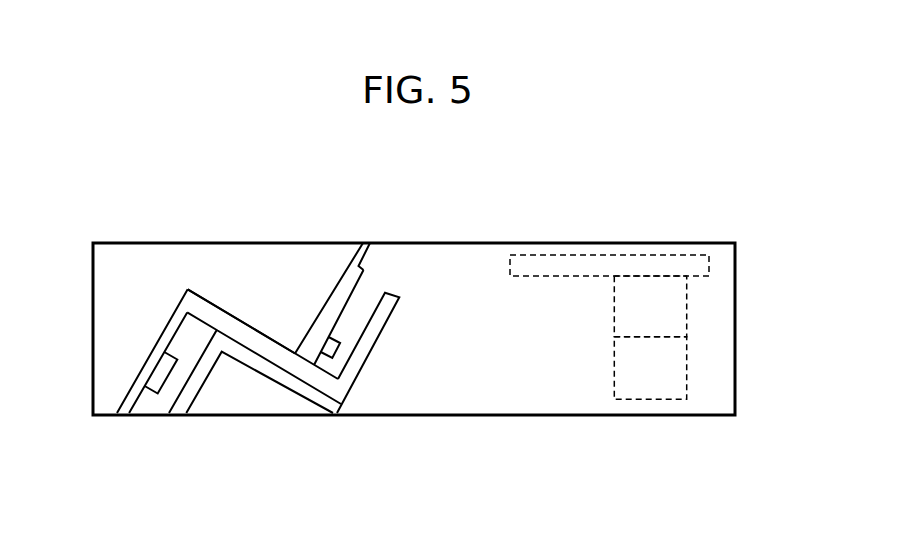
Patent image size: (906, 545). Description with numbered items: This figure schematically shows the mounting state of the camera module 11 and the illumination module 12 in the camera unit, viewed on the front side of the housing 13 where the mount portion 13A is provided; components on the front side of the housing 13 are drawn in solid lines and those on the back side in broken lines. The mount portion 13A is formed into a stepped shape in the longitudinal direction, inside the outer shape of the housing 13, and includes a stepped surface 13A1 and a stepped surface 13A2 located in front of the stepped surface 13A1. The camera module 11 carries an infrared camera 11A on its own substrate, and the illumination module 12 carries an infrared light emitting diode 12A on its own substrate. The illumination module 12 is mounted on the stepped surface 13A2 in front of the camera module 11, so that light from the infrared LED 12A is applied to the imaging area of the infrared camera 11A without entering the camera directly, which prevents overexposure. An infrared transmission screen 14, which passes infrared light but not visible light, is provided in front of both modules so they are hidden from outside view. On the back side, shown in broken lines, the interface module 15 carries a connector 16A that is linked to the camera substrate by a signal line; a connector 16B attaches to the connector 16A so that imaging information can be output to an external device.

The camera module 11 is at (138, 392).
The infrared camera 11A is at (167, 373).
The illumination module 12 is at (355, 293).
The infrared light emitting diode 12A is at (333, 352).
The housing 13 is at (477, 243).
The mount portion 13A is at (273, 345).
The stepped surface 13A1 is at (184, 307).
The stepped surface 13A2 is at (360, 265).
The infrared transmission screen 14 is at (385, 322).
The interface module 15 is at (660, 262).
The connector 16A is at (670, 303).
The connector 16B is at (672, 366).